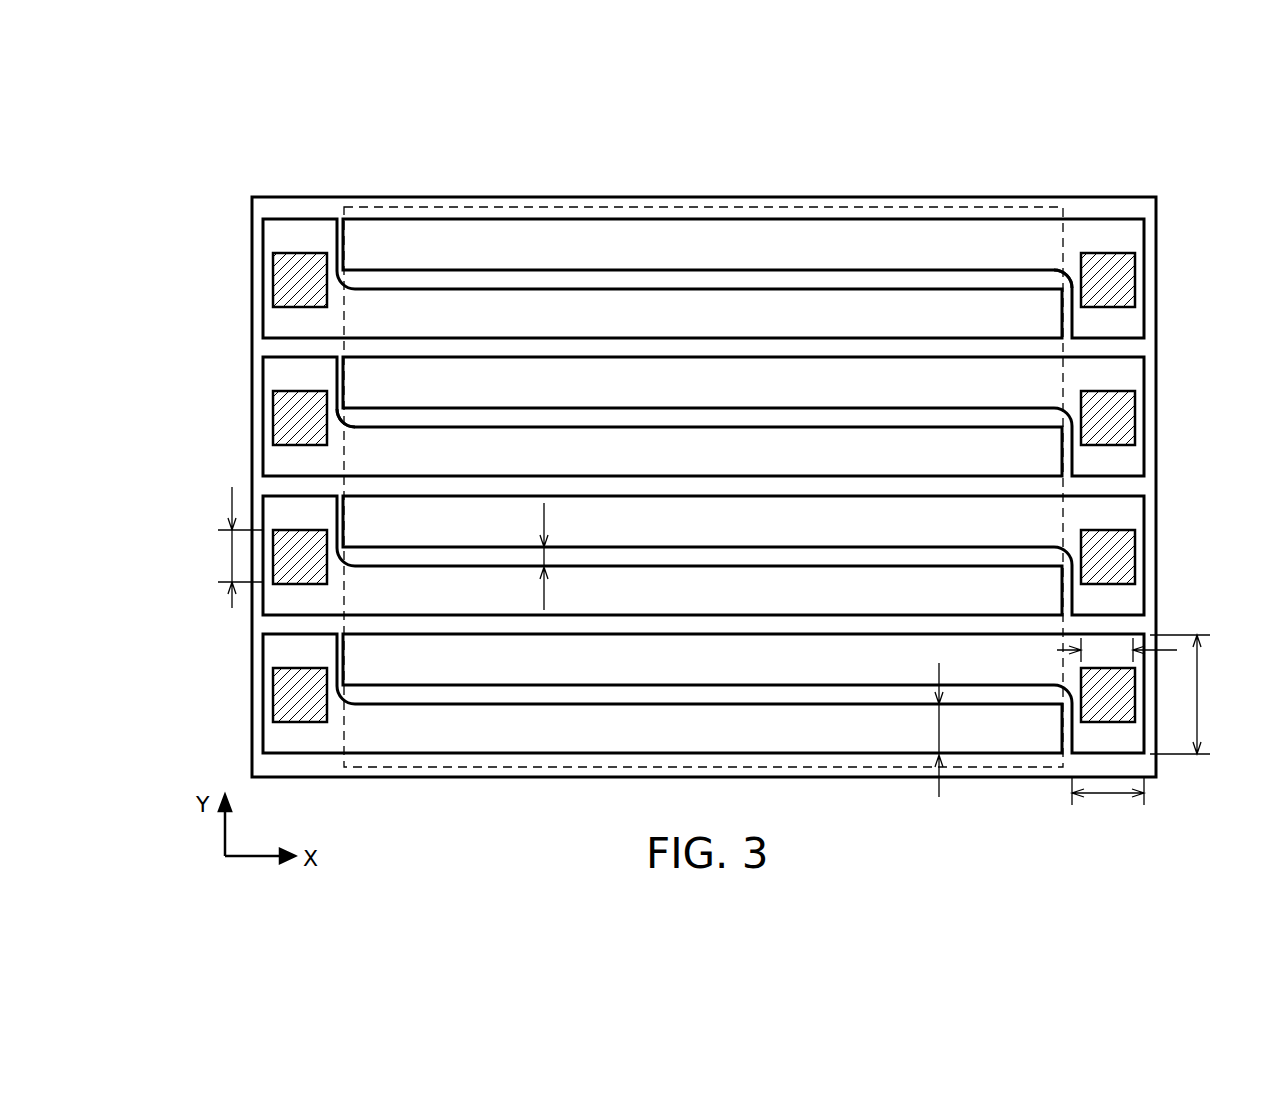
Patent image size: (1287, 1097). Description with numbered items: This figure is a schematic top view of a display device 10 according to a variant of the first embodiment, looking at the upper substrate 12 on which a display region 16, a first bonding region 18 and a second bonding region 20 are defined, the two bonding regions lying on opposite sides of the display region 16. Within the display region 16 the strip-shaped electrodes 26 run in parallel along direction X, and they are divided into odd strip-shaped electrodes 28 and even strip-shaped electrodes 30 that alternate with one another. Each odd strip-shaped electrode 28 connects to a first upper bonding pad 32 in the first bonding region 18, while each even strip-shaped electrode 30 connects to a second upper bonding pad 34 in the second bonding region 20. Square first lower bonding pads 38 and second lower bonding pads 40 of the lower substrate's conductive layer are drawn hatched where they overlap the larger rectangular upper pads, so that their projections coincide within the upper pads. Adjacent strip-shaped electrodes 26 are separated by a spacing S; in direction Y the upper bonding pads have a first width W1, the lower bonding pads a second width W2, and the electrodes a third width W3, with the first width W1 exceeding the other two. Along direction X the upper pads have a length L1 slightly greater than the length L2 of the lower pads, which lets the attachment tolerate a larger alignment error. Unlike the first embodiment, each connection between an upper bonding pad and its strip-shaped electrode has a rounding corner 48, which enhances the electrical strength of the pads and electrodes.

The display device 10 is at (1183, 118).
The upper substrate 12 is at (1157, 235).
The display region 16 is at (1063, 175).
The first bonding region 18 is at (343, 175).
The second bonding region 20 is at (1156, 175).
The strip-shaped electrodes 26 is at (637, 693).
The odd strip-shaped electrodes 28 is at (368, 732).
The even strip-shaped electrodes 30 is at (378, 652).
The first upper bonding pads 32 is at (275, 327).
The second upper bonding pads 34 is at (1130, 322).
The first lower bonding pads 38 is at (285, 416).
The second lower bonding pads 40 is at (1130, 420).
The rounding corner 48 is at (1059, 288).
The spacing S is at (544, 556).
The first width W1 is at (1194, 694).
The second width W2 is at (223, 547).
The third width W3 is at (956, 730).
The length of the upper bonding pads L1 is at (1108, 807).
The length of the lower bonding pads L2 is at (1108, 650).